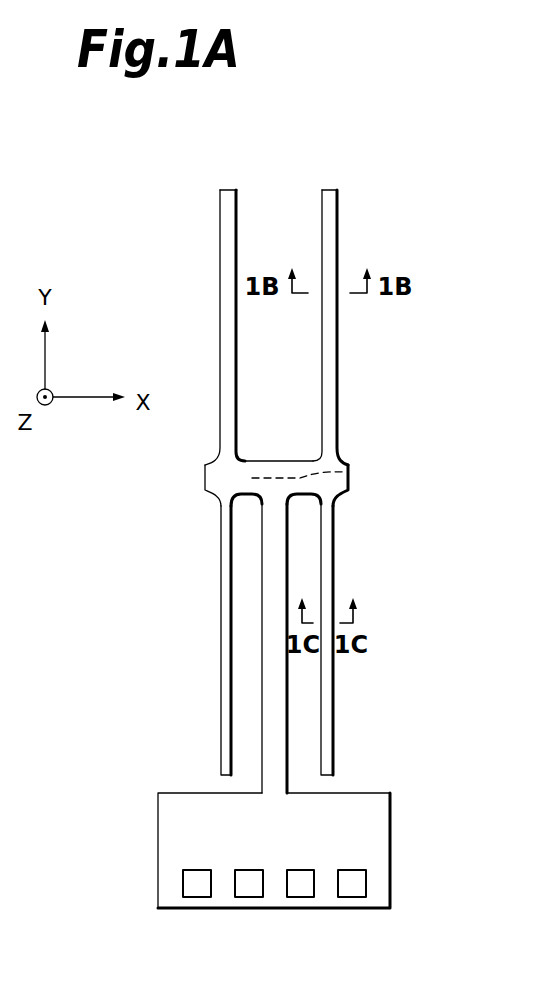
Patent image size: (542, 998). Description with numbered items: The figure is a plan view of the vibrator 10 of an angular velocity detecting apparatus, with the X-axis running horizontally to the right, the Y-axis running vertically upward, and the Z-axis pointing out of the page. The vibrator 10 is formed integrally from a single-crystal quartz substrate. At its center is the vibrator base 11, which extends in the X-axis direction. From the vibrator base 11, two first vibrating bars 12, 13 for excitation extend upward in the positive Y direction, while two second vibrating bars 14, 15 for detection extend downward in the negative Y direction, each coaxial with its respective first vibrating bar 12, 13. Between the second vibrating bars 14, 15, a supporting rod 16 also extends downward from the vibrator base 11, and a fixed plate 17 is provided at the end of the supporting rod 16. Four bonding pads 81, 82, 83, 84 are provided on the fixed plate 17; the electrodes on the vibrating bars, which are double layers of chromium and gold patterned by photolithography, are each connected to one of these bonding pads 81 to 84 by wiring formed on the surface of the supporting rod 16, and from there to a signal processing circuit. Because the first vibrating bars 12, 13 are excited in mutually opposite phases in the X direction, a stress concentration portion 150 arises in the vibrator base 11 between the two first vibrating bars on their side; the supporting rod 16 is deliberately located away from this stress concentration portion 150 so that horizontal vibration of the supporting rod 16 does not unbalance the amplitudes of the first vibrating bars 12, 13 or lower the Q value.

The vibrator 10 is at (334, 575).
The vibrator base 11 is at (276, 468).
The first vibrating bar 12 is at (238, 355).
The first vibrating bar 13 is at (339, 355).
The second vibrating bar 14 is at (219, 555).
The second vibrating bar 15 is at (334, 553).
The supporting rod 16 is at (291, 713).
The fixed plate 17 is at (385, 837).
The stress concentration portion 150 is at (352, 471).
The bonding pad 81 is at (198, 889).
The bonding pad 82 is at (250, 889).
The bonding pad 83 is at (301, 889).
The bonding pad 84 is at (352, 889).